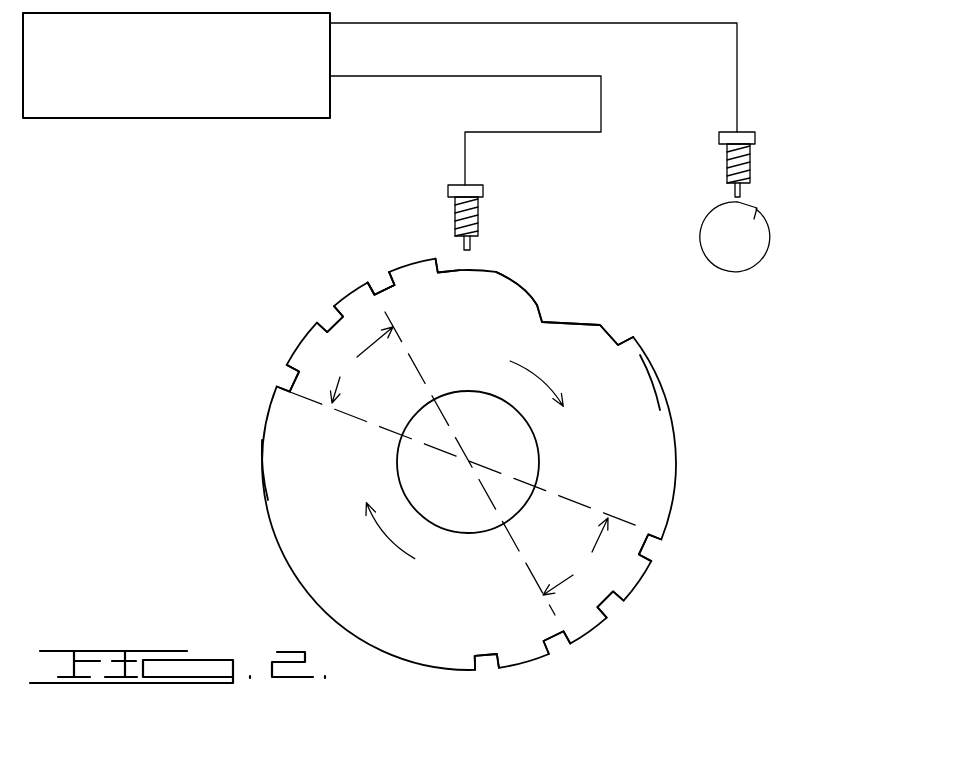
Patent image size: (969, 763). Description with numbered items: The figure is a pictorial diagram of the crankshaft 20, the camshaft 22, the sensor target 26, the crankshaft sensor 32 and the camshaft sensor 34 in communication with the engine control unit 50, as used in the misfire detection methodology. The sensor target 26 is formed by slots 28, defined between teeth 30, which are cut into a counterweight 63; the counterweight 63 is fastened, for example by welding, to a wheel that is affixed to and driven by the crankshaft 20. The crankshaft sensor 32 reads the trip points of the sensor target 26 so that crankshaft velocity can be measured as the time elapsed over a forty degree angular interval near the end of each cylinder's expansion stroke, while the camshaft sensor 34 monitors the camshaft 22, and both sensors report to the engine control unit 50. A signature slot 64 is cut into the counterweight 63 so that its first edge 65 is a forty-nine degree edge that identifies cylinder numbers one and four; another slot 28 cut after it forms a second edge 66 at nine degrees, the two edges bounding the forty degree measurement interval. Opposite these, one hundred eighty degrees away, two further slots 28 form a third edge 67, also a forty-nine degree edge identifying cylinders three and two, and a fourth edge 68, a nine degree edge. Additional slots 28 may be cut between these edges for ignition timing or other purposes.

The crankshaft 20 is at (469, 464).
The camshaft 22 is at (757, 252).
The sensor target 26 is at (282, 516).
The slots 28 is at (330, 313).
The teeth 30 is at (342, 295).
The crankshaft sensor 32 is at (470, 212).
The camshaft sensor 34 is at (755, 163).
The engine control unit 50 is at (157, 103).
The counterweight 63 is at (648, 381).
The signature slot 64 is at (536, 305).
The first edge 65 is at (377, 285).
The second edge 66 is at (288, 388).
The third edge 67 is at (565, 645).
The fourth edge 68 is at (653, 535).